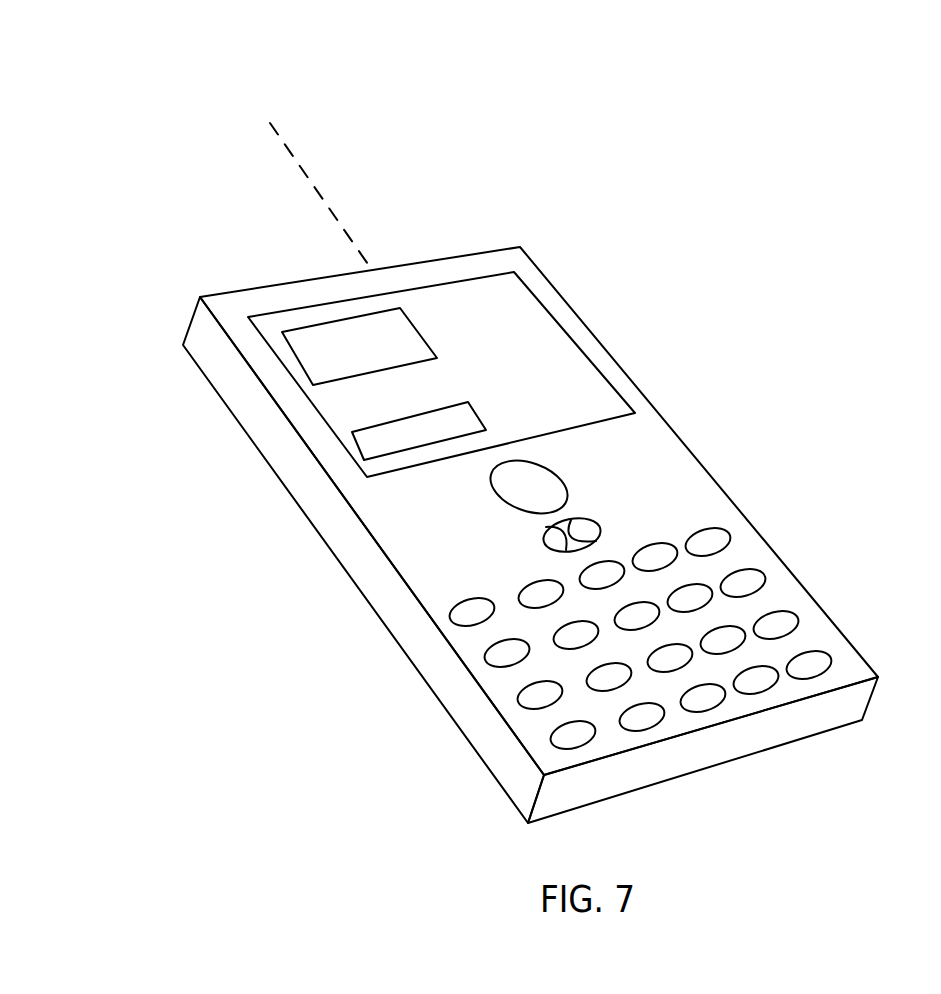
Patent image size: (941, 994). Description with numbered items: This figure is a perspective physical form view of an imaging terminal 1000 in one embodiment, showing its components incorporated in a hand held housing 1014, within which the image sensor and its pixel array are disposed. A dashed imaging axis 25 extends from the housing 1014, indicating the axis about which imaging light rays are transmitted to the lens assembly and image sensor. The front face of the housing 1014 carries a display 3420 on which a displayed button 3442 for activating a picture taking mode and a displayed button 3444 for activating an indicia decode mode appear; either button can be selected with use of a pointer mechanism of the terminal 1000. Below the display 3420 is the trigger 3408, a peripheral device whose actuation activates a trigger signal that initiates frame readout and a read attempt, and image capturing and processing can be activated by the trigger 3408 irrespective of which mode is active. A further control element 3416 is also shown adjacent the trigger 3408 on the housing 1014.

The terminal 1000 is at (502, 421).
The hand held housing 1014 is at (748, 553).
The imaging axis 25 is at (308, 177).
The display 3420 is at (590, 357).
The displayed button 3442 is at (297, 360).
The displayed button 3444 is at (356, 449).
The trigger 3408 is at (543, 465).
The navigation button 3416 is at (597, 523).